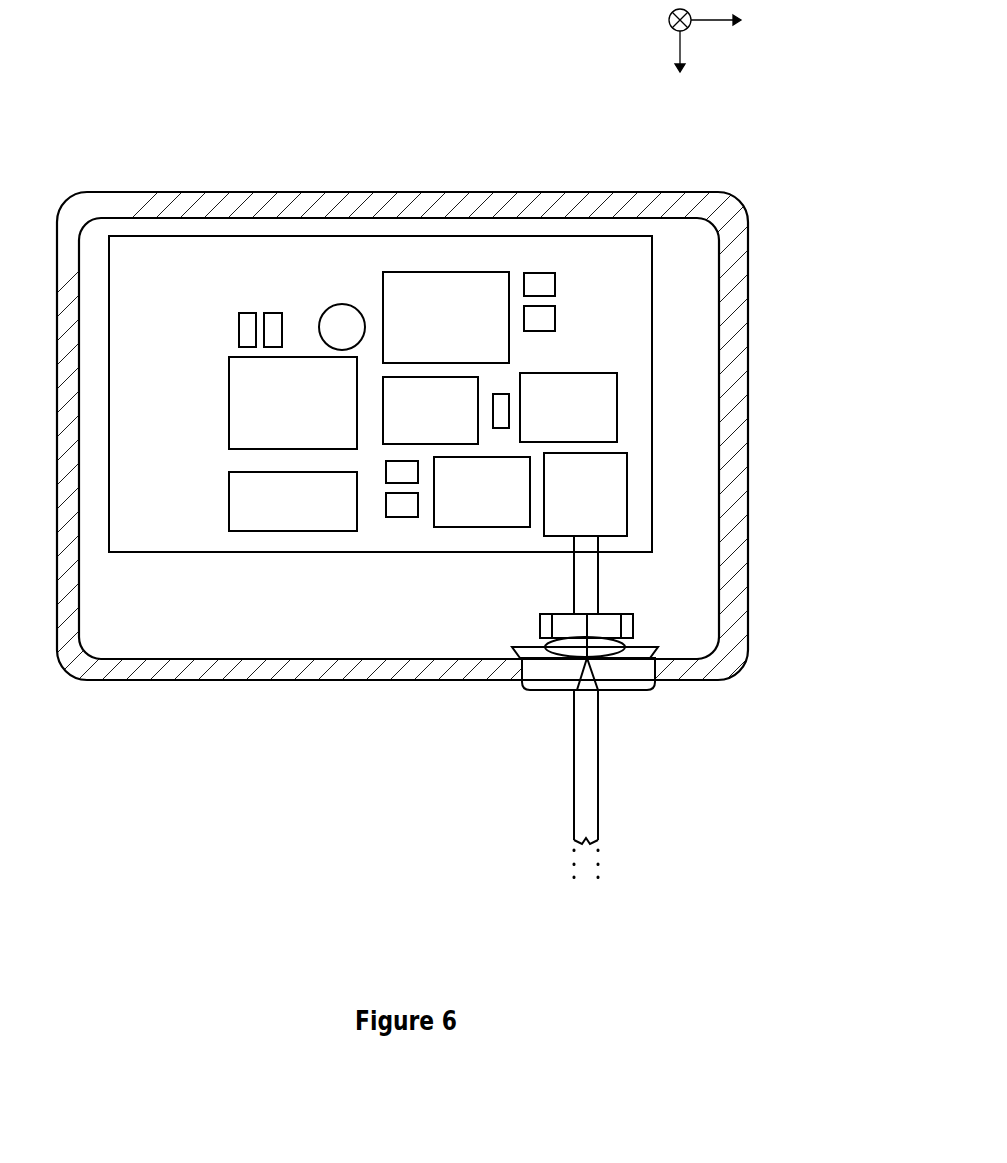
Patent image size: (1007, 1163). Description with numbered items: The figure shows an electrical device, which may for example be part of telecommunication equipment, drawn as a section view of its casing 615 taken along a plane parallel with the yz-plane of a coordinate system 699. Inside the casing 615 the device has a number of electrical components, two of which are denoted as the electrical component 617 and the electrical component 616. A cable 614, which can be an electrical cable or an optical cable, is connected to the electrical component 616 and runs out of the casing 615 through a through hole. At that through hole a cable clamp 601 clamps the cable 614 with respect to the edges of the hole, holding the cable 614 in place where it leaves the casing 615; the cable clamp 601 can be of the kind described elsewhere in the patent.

The coordinate system 699 is at (736, 66).
The casing 615 is at (200, 681).
The electrical component 617 is at (314, 415).
The electrical component 616 is at (605, 507).
The cable clamp 601 is at (544, 691).
The cable 614 is at (599, 783).